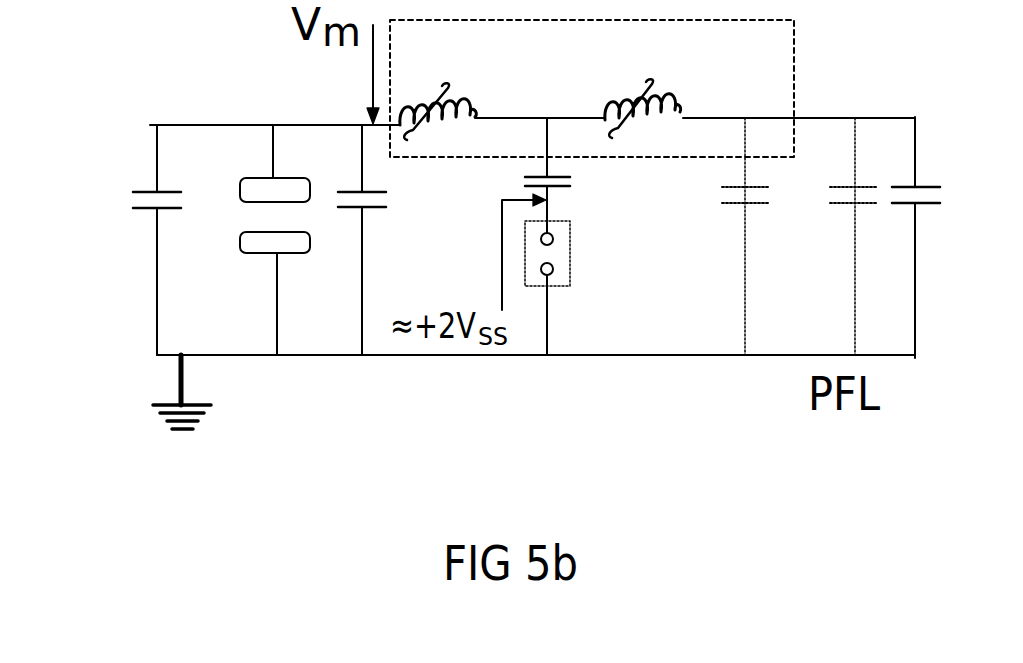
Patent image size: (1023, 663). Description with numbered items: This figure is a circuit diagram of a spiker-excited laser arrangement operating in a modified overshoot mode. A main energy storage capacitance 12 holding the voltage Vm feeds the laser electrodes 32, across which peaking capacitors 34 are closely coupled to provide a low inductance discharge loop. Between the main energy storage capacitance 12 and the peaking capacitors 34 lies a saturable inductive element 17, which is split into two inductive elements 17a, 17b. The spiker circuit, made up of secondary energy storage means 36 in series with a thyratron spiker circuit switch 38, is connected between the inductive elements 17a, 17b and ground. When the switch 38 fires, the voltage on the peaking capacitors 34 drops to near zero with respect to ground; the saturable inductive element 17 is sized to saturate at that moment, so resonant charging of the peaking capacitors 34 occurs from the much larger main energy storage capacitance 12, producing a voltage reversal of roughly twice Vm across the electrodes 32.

The main energy storage capacitance 12 is at (749, 205).
The saturable inductive element 17 is at (795, 61).
The inductive element 17a is at (476, 116).
The inductive element 17b is at (682, 103).
The electrodes 32 is at (240, 180).
The peaking capacitors 34 is at (137, 211).
The secondary energy storage means 36 is at (568, 192).
The thyratron spiker circuit switch 38 is at (570, 258).